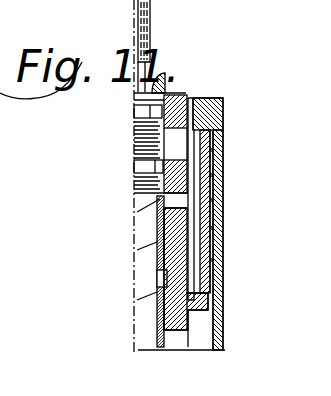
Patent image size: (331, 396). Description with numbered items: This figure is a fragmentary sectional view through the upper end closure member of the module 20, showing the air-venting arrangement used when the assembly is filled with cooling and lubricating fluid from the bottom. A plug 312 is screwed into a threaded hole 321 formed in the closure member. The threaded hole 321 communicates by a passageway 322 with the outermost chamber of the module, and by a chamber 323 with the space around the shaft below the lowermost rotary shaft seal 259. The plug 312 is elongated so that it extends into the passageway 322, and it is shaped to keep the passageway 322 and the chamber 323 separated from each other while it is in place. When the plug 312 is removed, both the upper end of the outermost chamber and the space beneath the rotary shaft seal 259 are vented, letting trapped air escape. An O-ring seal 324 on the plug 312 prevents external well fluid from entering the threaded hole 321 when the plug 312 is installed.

The module 20 is at (241, 224).
The rotary shaft seal 259 is at (140, 178).
The plug 312 is at (196, 98).
The threaded hole 321 is at (224, 117).
The passageway 322 is at (214, 245).
The chamber 323 is at (198, 205).
The O-ring seal 324 is at (192, 100).